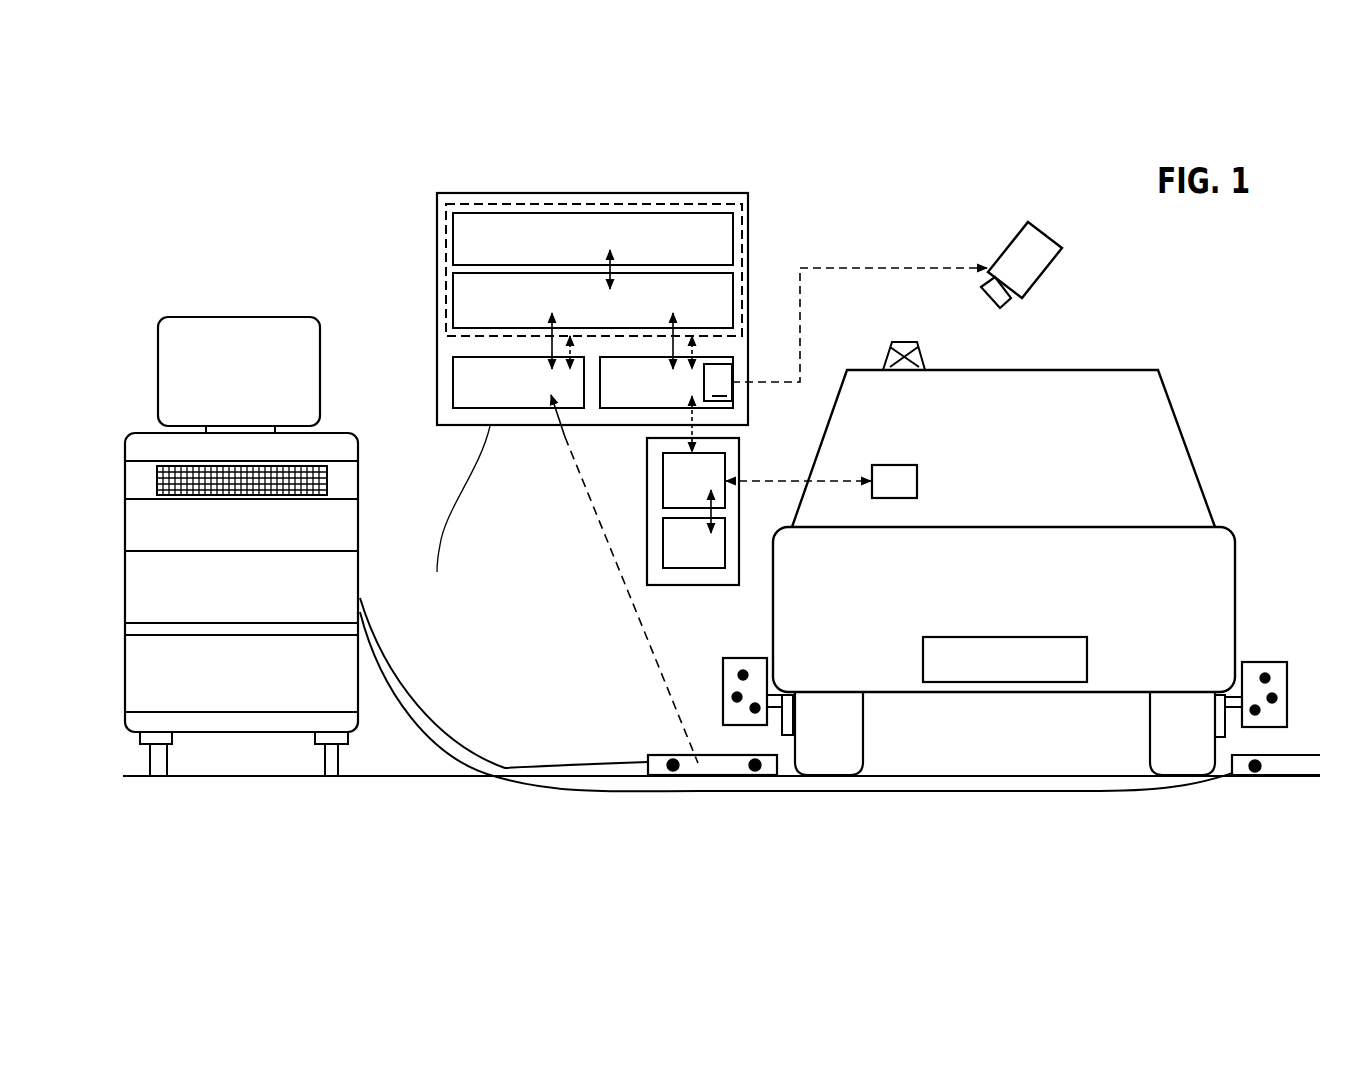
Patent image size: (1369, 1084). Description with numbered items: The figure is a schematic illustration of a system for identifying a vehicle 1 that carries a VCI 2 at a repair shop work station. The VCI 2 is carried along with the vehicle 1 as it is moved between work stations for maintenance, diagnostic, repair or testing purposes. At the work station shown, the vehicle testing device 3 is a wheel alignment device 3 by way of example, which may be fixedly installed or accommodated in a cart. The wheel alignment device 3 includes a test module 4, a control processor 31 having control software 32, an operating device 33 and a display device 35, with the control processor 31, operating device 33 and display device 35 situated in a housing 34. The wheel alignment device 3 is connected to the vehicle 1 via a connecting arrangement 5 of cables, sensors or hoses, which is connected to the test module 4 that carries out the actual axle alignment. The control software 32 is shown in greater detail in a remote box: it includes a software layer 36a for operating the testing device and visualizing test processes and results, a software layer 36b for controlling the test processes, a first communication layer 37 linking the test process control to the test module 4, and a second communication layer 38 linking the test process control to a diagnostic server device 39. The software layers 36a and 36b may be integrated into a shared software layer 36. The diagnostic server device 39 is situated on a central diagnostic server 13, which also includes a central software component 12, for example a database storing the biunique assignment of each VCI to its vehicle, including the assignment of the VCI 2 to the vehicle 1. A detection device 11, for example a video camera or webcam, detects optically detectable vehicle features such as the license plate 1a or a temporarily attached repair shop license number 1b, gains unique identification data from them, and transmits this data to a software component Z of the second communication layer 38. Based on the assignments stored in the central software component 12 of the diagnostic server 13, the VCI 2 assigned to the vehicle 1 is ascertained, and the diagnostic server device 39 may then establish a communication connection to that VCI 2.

The vehicle 1 is at (1004, 525).
The license plate 1a is at (1033, 637).
The repair shop license number 1b is at (925, 355).
The VCI 2 is at (905, 481).
The vehicle testing device 3 is at (200, 546).
The test module 4 is at (715, 755).
The connecting arrangement 5 is at (430, 745).
The detection device 11 is at (1008, 236).
The central software component 12 is at (697, 560).
The central diagnostic server 13 is at (673, 511).
The control processor 31 is at (147, 590).
The control software 32 is at (358, 597).
The operating device 33 is at (155, 478).
The housing 34 is at (125, 444).
The display device 35 is at (180, 374).
The shared software layer 36 is at (538, 309).
The software layer 36a is at (533, 252).
The software layer 36b is at (533, 312).
The first communication layer 37 is at (532, 394).
The second communication layer 38 is at (663, 394).
The diagnostic server device 39 is at (697, 493).